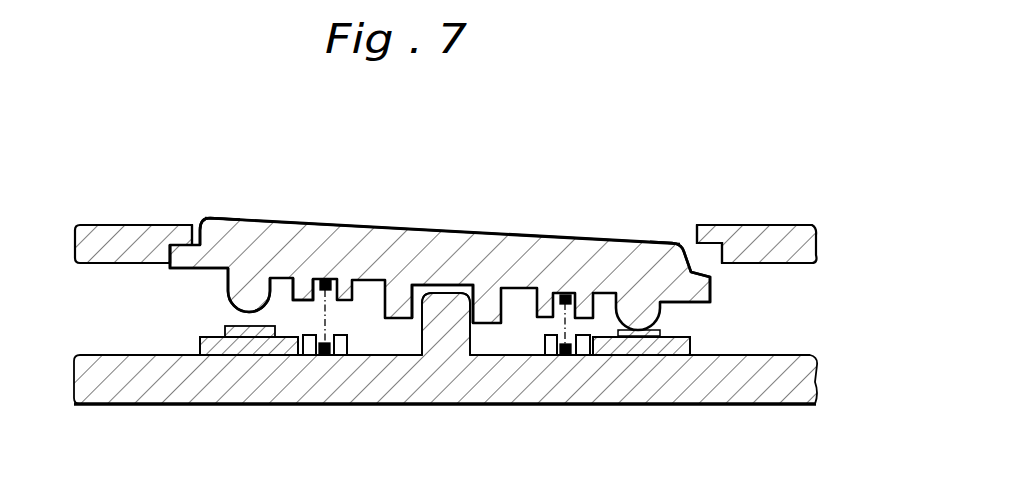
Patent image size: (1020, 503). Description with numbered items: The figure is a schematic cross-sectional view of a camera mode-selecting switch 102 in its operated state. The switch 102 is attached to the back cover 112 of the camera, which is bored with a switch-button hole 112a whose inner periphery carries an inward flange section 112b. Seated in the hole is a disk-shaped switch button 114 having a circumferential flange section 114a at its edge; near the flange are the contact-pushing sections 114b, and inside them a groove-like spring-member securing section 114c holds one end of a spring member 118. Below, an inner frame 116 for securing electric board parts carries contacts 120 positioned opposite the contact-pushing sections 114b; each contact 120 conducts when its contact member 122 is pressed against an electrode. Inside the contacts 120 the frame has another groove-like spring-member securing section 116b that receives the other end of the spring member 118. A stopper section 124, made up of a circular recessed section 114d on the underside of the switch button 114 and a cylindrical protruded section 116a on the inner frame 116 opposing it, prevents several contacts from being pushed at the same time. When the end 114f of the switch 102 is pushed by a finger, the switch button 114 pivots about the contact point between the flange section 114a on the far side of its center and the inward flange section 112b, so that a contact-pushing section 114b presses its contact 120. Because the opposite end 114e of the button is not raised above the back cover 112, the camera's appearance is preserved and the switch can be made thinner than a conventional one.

The mode-selecting switch 102 is at (507, 228).
The back cover 112 is at (100, 226).
The switch-button hole 112a is at (693, 250).
The inward flange section 112b is at (148, 243).
The switch button 114 is at (598, 250).
The flange section 114a is at (174, 272).
The contact-pushing sections 114b is at (231, 301).
The spring-member securing section 114c is at (302, 250).
The recessed section 114d is at (446, 283).
The end of the switch button 114e is at (200, 222).
The end of the mode-selecting switch 114f is at (677, 243).
The inner frame 116 is at (682, 388).
The protruded section 116a is at (455, 330).
The spring-member securing section 116b is at (304, 352).
The spring member 118 is at (566, 296).
The contacts 120 is at (200, 347).
The contact member 122 is at (228, 326).
The stopper section 124 is at (410, 325).